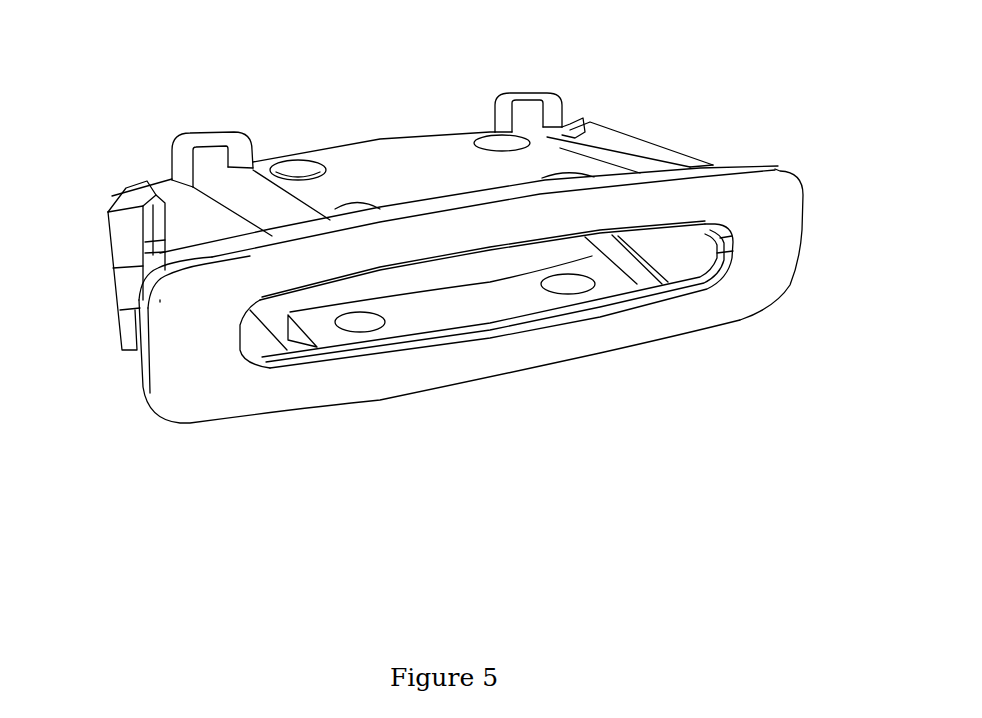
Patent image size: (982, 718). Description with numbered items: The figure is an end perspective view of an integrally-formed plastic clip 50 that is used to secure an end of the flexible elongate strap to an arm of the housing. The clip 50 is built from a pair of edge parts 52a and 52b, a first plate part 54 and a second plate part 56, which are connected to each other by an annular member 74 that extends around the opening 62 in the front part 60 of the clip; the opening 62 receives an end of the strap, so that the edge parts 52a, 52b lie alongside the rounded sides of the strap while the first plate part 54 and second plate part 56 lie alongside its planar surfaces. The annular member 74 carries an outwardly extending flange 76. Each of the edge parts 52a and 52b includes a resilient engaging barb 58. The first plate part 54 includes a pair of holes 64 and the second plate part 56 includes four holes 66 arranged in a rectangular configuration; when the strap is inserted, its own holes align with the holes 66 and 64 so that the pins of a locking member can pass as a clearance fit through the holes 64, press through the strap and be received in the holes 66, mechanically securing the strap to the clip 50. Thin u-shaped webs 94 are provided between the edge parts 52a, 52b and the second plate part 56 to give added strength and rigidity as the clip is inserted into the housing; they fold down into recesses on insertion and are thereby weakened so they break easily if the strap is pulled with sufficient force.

The clip 50 is at (462, 462).
The edge part 52a is at (187, 208).
The edge part 52b is at (637, 153).
The first plate part 54 is at (518, 298).
The second plate part 56 is at (431, 168).
The resilient engaging barb 58 is at (126, 246).
The front part 60 is at (178, 352).
The opening 62 is at (453, 268).
The holes 64 is at (357, 327).
The holes 66 is at (357, 207).
The annular member 74 is at (233, 375).
The flange 76 is at (783, 222).
The u-shaped web 94 is at (208, 130).